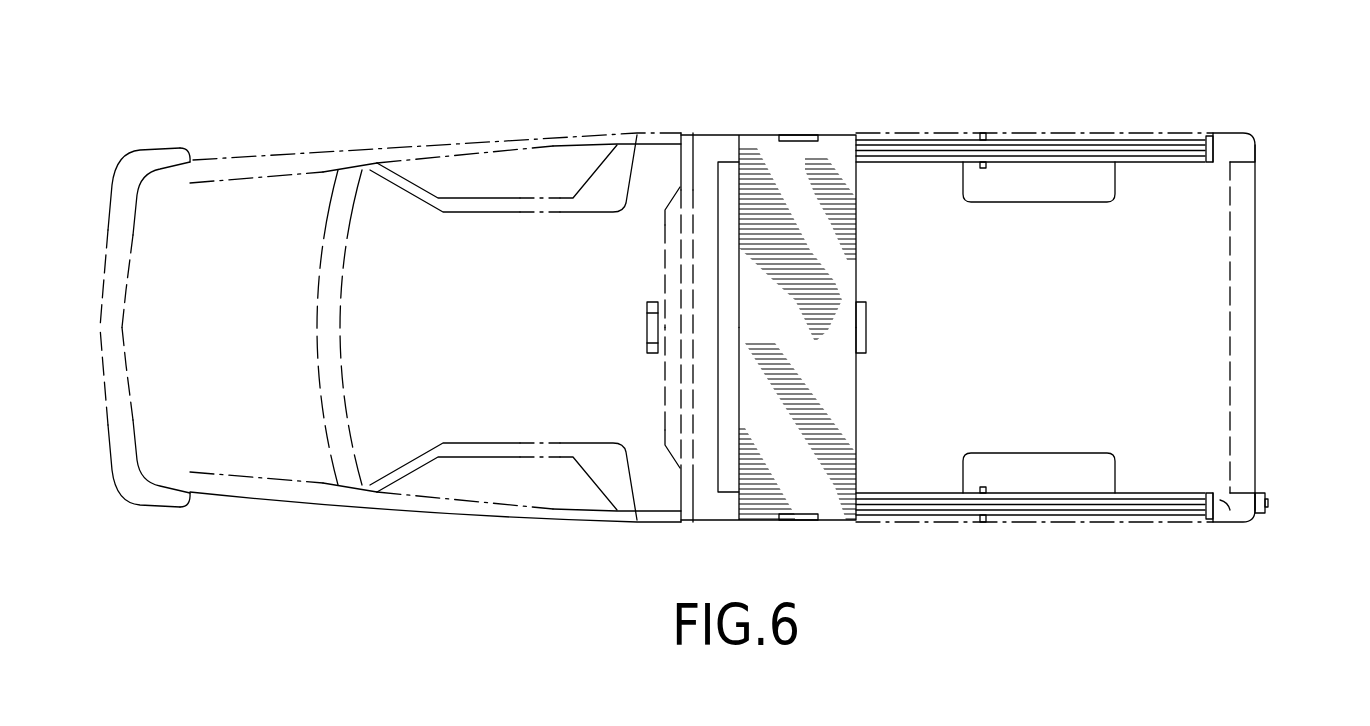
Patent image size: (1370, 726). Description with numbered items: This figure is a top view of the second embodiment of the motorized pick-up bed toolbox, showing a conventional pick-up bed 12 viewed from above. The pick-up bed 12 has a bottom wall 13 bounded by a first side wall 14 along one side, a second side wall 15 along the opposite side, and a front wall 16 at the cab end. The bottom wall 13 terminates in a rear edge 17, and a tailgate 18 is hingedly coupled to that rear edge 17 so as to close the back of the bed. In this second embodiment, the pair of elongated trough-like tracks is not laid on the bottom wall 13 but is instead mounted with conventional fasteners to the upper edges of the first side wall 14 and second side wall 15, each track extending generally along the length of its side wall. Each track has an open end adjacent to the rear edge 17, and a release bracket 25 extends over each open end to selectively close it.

The pick-up bed 12 is at (1255, 133).
The bottom wall 13 is at (1197, 353).
The first side wall 14 is at (1237, 523).
The second side wall 15 is at (1230, 133).
The front wall 16 is at (705, 177).
The rear edge 17 is at (1230, 262).
The tailgate 18 is at (1243, 302).
The release bracket 25 is at (1220, 152).